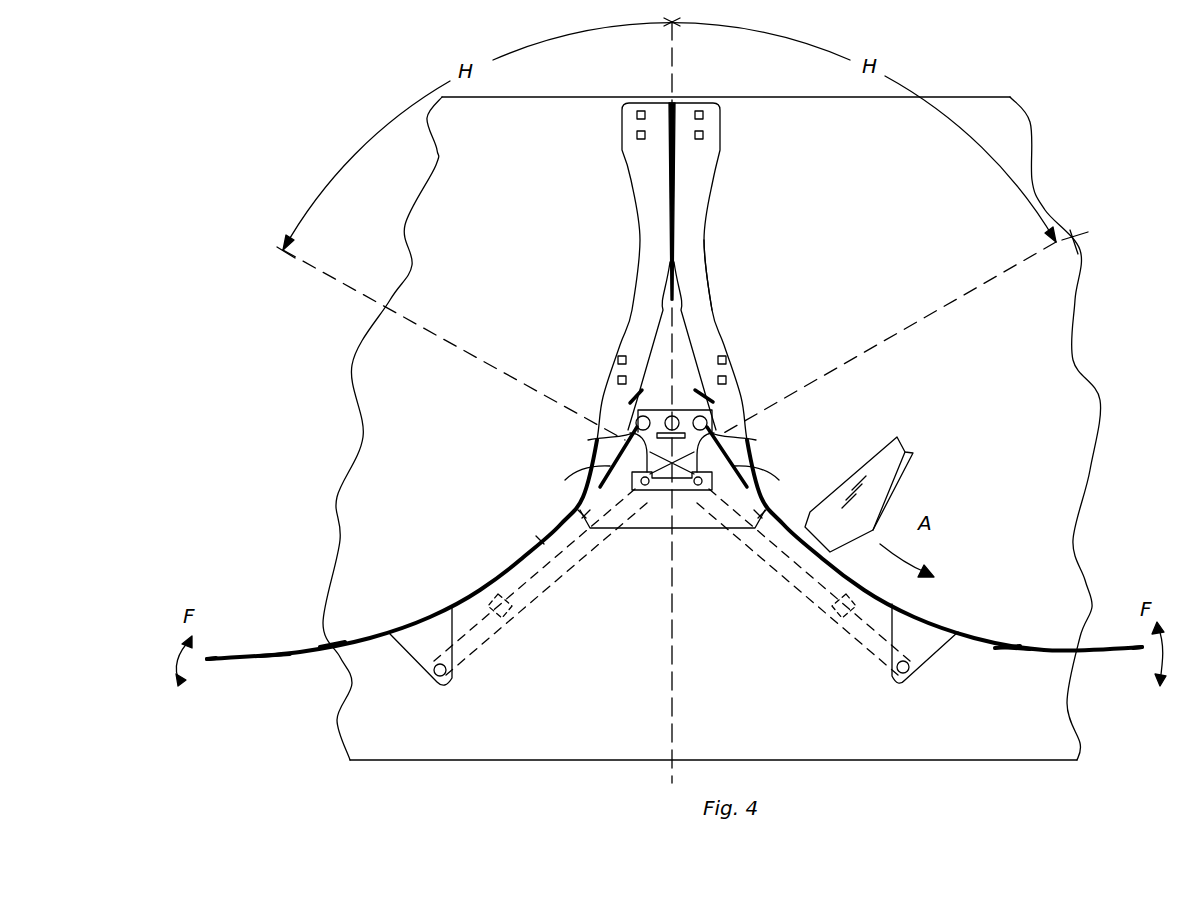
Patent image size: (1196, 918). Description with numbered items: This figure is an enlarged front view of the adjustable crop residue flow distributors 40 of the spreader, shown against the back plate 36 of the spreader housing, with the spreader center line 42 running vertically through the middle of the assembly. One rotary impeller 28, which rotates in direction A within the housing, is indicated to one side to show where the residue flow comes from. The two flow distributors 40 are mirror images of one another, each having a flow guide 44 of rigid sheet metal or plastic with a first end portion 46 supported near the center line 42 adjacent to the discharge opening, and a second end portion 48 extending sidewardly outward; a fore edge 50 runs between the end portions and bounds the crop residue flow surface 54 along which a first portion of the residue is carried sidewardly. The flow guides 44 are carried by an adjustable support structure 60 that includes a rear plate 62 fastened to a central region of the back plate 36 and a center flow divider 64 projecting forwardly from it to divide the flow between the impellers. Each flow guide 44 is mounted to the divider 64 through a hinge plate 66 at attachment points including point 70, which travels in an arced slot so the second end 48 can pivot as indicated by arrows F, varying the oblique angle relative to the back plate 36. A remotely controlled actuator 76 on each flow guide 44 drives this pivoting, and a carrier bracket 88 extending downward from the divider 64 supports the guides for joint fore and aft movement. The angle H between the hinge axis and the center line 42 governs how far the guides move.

The rotary impeller 28 is at (913, 452).
The back plate 36 is at (868, 156).
The adjustable crop residue flow distributor 40 is at (289, 665).
The center line 42 is at (680, 78).
The flow guide 44 is at (372, 660).
The first end portion 46 is at (600, 437).
The second end portion 48 is at (228, 655).
The fore edge 50 is at (275, 653).
The crop residue flow surface 54 is at (328, 632).
The adjustable support structure 60 is at (738, 303).
The rear plate 62 is at (700, 222).
The center flow divider 64 is at (676, 176).
The hinge plate 66 is at (580, 478).
The attachment point 70 is at (630, 402).
The remotely controlled actuator 76 is at (562, 572).
The carrier bracket 88 is at (665, 375).